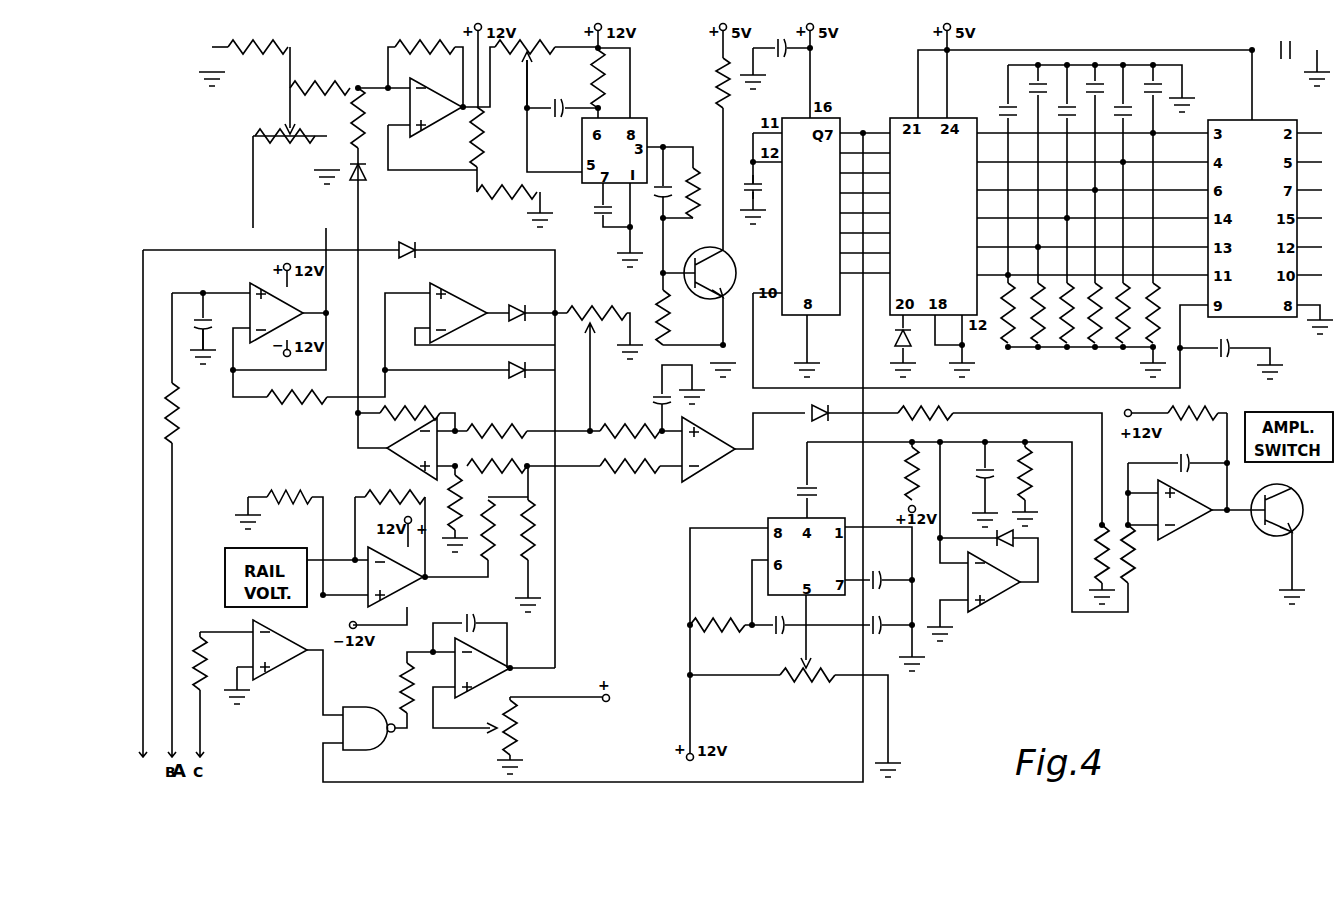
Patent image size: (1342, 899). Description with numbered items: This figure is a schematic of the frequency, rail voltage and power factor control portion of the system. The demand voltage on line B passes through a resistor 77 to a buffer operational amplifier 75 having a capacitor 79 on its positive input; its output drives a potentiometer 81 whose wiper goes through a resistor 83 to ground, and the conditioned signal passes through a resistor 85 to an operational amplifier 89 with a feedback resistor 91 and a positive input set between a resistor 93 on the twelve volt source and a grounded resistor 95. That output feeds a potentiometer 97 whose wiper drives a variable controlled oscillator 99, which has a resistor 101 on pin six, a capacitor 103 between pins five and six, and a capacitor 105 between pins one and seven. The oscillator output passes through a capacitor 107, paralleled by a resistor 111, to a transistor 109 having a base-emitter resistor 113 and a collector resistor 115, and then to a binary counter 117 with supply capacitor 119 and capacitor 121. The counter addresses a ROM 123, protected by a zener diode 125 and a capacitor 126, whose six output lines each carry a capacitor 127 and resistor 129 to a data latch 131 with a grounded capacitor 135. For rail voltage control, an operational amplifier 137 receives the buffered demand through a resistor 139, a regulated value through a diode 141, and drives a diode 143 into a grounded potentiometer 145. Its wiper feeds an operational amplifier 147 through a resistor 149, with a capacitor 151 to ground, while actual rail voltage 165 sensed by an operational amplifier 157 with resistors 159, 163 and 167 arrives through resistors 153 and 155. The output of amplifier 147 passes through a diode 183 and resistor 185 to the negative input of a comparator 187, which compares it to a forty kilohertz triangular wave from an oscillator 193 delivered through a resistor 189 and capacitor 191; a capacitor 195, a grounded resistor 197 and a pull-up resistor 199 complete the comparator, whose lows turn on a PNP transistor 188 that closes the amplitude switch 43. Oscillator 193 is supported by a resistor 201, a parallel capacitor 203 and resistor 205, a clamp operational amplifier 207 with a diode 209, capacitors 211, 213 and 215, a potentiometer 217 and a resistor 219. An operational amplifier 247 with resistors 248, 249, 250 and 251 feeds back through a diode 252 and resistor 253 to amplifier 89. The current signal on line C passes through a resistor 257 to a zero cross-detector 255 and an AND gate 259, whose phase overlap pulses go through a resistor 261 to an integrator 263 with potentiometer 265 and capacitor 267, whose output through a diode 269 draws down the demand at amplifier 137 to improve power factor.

The amplitude switch 43 is at (1293, 412).
The operational amplifier 75 is at (257, 283).
The resistor 77 is at (176, 413).
The capacitor 79 is at (206, 318).
The potentiometer 81 is at (280, 128).
The resistor 83 is at (245, 41).
The resistor 85 is at (318, 85).
The operational amplifier 89 is at (433, 92).
The resistor 91 is at (428, 41).
The resistor 93 is at (473, 130).
The resistor 95 is at (515, 204).
The potentiometer 97 is at (531, 38).
The oscillator 99 is at (646, 118).
The resistor 101 is at (597, 80).
The capacitor 103 is at (560, 118).
The capacitor 105 is at (598, 218).
The capacitor 107 is at (682, 169).
The transistor 109 is at (707, 301).
The resistor 111 is at (690, 230).
The resistor 113 is at (660, 305).
The resistor 115 is at (720, 85).
The binary counter 117 is at (795, 320).
The capacitor 119 is at (785, 58).
The capacitor 121 is at (762, 200).
The ROM memory means 123 is at (908, 115).
The zener diode 125 is at (907, 340).
The capacitor 126 is at (1283, 60).
The capacitor 127 is at (1006, 107).
The resistor 129 is at (1008, 347).
The data latch 131 is at (1240, 120).
The capacitor 135 is at (1231, 345).
The operational amplifier 137 is at (460, 293).
The resistor 139 is at (298, 400).
The diode 141 is at (435, 246).
The diode 143 is at (520, 298).
The potentiometer 145 is at (587, 310).
The operational amplifier 147 is at (710, 418).
The resistor 149 is at (633, 430).
The capacitor 151 is at (655, 396).
The resistor 153 is at (620, 466).
The resistor 155 is at (458, 543).
The operational amplifier 157 is at (373, 578).
The resistor 159 is at (526, 560).
The resistor 163 is at (280, 497).
The rail voltage 165 is at (225, 560).
The resistor 167 is at (385, 497).
The diode 183 is at (815, 418).
The resistor 185 is at (951, 410).
The comparator 187 is at (1180, 492).
The PNP transistor 188 is at (1290, 500).
The resistor 189 is at (1160, 525).
The capacitor 191 is at (806, 490).
The oscillator 193 is at (820, 518).
The capacitor 195 is at (1192, 459).
The resistor 197 is at (1098, 540).
The resistor 199 is at (1205, 412).
The resistor 201 is at (909, 475).
The capacitor 203 is at (975, 475).
The resistor 205 is at (1027, 477).
The operational amplifier 207 is at (968, 582).
The diode 209 is at (997, 540).
The capacitor 211 is at (885, 567).
The capacitor 213 is at (885, 617).
The capacitor 215 is at (775, 628).
The potentiometer 217 is at (805, 670).
The resistor 219 is at (713, 617).
The operational amplifier 247 is at (395, 460).
The resistor 248 is at (497, 464).
The resistor 249 is at (463, 510).
The resistor 250 is at (498, 428).
The resistor 251 is at (410, 409).
The diode 252 is at (364, 180).
The resistor 253 is at (357, 135).
The zero cross-detector 255 is at (288, 667).
The resistor 257 is at (203, 680).
The AND gate 259 is at (343, 727).
The resistor 261 is at (397, 678).
The averaging means 263 is at (495, 690).
The potentiometer 265 is at (515, 730).
The capacitor 267 is at (466, 621).
The diode 269 is at (508, 372).